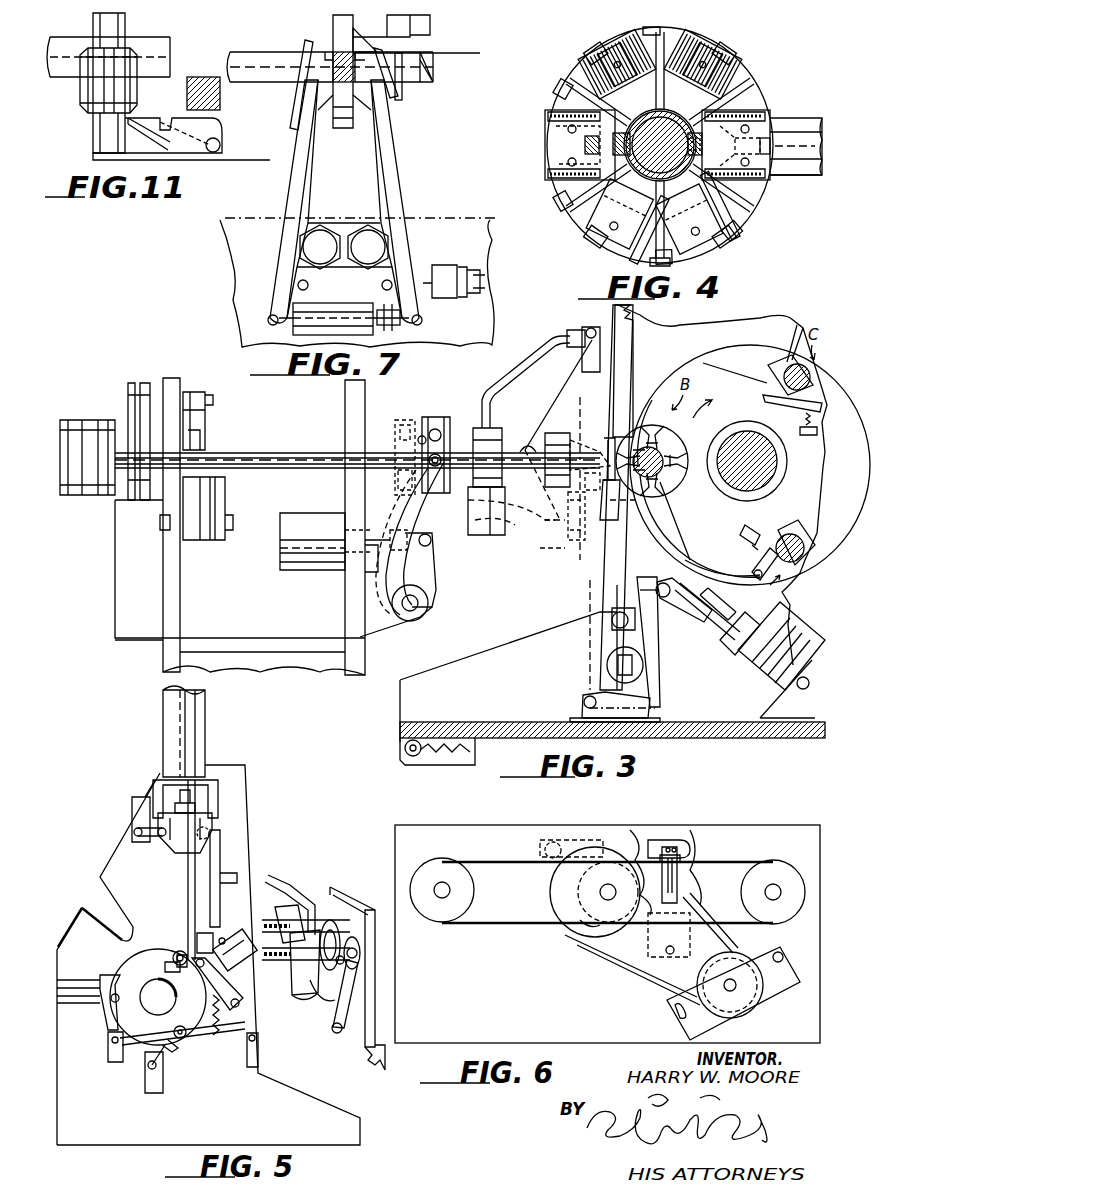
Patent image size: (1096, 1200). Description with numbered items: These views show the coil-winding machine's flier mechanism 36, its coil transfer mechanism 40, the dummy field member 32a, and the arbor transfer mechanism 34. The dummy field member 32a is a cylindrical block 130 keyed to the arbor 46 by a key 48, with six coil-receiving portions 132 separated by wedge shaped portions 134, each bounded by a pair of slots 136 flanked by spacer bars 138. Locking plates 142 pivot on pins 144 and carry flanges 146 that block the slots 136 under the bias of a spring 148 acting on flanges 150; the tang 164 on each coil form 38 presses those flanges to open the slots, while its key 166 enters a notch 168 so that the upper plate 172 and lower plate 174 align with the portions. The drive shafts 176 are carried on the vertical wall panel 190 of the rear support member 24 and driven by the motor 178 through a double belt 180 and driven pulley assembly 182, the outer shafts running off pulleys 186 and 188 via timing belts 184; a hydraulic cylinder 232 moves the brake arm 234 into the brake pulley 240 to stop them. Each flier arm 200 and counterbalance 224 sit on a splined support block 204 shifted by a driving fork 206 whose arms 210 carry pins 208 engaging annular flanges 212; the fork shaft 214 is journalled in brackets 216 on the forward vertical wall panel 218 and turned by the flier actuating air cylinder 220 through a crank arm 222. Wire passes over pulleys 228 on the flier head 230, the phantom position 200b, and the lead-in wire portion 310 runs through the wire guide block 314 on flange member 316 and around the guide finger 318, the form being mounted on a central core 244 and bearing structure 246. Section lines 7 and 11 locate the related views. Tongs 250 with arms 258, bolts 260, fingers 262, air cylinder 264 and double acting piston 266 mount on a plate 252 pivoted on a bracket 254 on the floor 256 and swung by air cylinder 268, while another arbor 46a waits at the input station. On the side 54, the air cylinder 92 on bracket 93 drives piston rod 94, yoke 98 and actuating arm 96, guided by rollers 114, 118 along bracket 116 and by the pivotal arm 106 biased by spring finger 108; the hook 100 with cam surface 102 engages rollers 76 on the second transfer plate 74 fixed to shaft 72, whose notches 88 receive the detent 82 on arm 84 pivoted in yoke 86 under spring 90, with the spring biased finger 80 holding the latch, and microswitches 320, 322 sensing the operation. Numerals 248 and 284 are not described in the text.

In FIG. 7, the section line 11— 11 is at (385, 15).
In FIG. 11, the wire portion 310 is at (150, 128).
In FIG. 11, the wire guide block 314 is at (218, 135).
In FIG. 7, the wire guide block 314 is at (405, 40).
In FIG. 11, the flange member 316 is at (205, 77).
In FIG. 7, the flange member 316 is at (432, 27).
In FIG. 3, the flange member 316 is at (638, 350).
In FIG. 7, the guide finger 318 is at (418, 66).
In FIG. 7, the central core 244 is at (340, 48).
In FIG. 7, the finger 262 is at (392, 92).
In FIG. 7, the tong 250 is at (393, 152).
In FIG. 3, the tong 250 is at (620, 565).
In FIG. 7, the arm 258 is at (318, 174).
In FIG. 7, the coil transfer mechanism 40 is at (254, 204).
In FIG. 3, the coil transfer mechanism 40 is at (576, 583).
In FIG. 7, the plate 252 is at (465, 224).
In FIG. 3, the plate 252 is at (655, 680).
In FIG. 7, the bolt 260 is at (362, 256).
In FIG. 7, the air cylinder 264 is at (345, 312).
In FIG. 3, the air cylinder 264 is at (662, 708).
In FIG. 7, the double acting piston 266 is at (390, 325).
In FIG. 4, the coil form 38 is at (797, 86).
In FIG. 4, the arbor 46 is at (646, 175).
In FIG. 4, the key 48 is at (654, 141).
In FIG. 4, the coil-receiving portion 132 is at (718, 246).
In FIG. 4, the wedge shaped portion 134 is at (565, 210).
In FIG. 4, the slot 136 is at (694, 256).
In FIG. 4, the dummy field member 32a is at (640, 25).
In FIG. 4, the block 130 is at (662, 25).
In FIG. 4, the pin 144 is at (610, 225).
In FIG. 4, the spacer bar 138 is at (722, 205).
In FIG. 4, the flange 146 is at (552, 118).
In FIG. 4, the locking plate 142 is at (552, 175).
In FIG. 4, the flange 150 is at (585, 147).
In FIG. 4, the spring 148 is at (710, 138).
In FIG. 4, the notch 168 is at (728, 252).
In FIG. 4, the key 166 is at (772, 146).
In FIG. 4, the upper plate 172 is at (804, 127).
In FIG. 4, the tang 164 is at (772, 177).
In FIG. 4, the lower plate 174 is at (814, 177).
In FIG. 3, the vertical wall panel 190 is at (175, 588).
In FIG. 6, the vertical wall panel 190 is at (507, 988).
In FIG. 3, the rear support member 24 is at (258, 635).
In FIG. 3, the pulley 186 is at (98, 424).
In FIG. 6, the pulley 186 is at (555, 890).
In FIG. 3, the drive shaft 176 is at (294, 452).
In FIG. 5, the drive shaft 176 is at (295, 962).
In FIG. 6, the drive shaft 176 is at (605, 892).
In FIG. 3, the driven pulley assembly 182 is at (120, 383).
In FIG. 3, the double belt 180 is at (133, 380).
In FIG. 6, the double belt 180 is at (655, 972).
In FIG. 3, the brake arm 234 is at (195, 392).
In FIG. 6, the brake arm 234 is at (658, 845).
In FIG. 3, the brake pulley 240 is at (195, 440).
In FIG. 3, the hydraulic cylinder 232 is at (212, 500).
In FIG. 3, the flier actuating air cylinder 220 is at (318, 522).
In FIG. 3, the forward vertical wall panel 218 is at (352, 598).
In FIG. 3, the bracket 216 is at (378, 622).
In FIG. 3, the driving fork 206 is at (393, 512).
In FIG. 3, the crank arm 222 is at (432, 545).
In FIG. 3, the shaft 214 is at (428, 605).
In FIG. 3, the pin 208 is at (395, 430).
In FIG. 3, the annular flange 212 is at (430, 420).
In FIG. 5, the annular flange 212 is at (342, 938).
In FIG. 3, the arm 210 is at (440, 513).
In FIG. 5, the arm 210 is at (347, 988).
In FIG. 3, the support block 204 is at (492, 428).
In FIG. 3, the counterbalance 224 is at (478, 543).
In FIG. 3, the bearing structure 246 is at (560, 438).
In FIG. 3, the wedge 248 is at (596, 471).
In FIG. 3, the phantom-line flier position 200b is at (540, 552).
In FIG. 3, the flier arm 200 is at (512, 370).
In FIG. 5, the flier arm 200 is at (288, 880).
In FIG. 3, the flier head 230 is at (568, 338).
In FIG. 3, the pulley 228 is at (588, 328).
In FIG. 3, the flier mechanism 36 is at (470, 396).
In FIG. 5, the flier mechanism 36 is at (307, 882).
In FIG. 3, the section line 7— 7 is at (575, 692).
In FIG. 3, the bracket 254 is at (565, 705).
In FIG. 3, the floor 256 is at (722, 736).
In FIG. 3, the piston rod 284 is at (732, 632).
In FIG. 3, the air cylinder 268 is at (805, 628).
In FIG. 3, the arbor 46a is at (790, 565).
In FIG. 5, the side 54 is at (116, 852).
In FIG. 5, the arbor transfer mechanism 34 is at (112, 832).
In FIG. 5, the air cylinder 92 is at (200, 715).
In FIG. 5, the bracket 93 is at (158, 780).
In FIG. 5, the piston rod 94 is at (178, 798).
In FIG. 5, the yoke 98 is at (180, 852).
In FIG. 5, the microswitch 320 is at (135, 812).
In FIG. 5, the guide roller 114 is at (207, 832).
In FIG. 5, the bracket 116 is at (212, 850).
In FIG. 5, the actuating arm 96 is at (190, 882).
In FIG. 5, the guide roller 118 is at (176, 933).
In FIG. 5, the hook 100 is at (207, 940).
In FIG. 5, the spring finger 108 is at (222, 965).
In FIG. 5, the pivotal arm 106 is at (222, 985).
In FIG. 5, the second transfer plate 74 is at (132, 966).
In FIG. 5, the shaft 72 is at (158, 997).
In FIG. 5, the cam surface 102 is at (168, 966).
In FIG. 5, the roller 76 is at (182, 1028).
In FIG. 5, the spring biased finger 80 is at (88, 985).
In FIG. 5, the spring 90 is at (213, 998).
In FIG. 5, the detent 82 is at (168, 1045).
In FIG. 5, the arm 84 is at (190, 1040).
In FIG. 5, the notch 88 is at (165, 1045).
In FIG. 5, the yoke 86 is at (252, 1052).
In FIG. 5, the microswitch 322 is at (148, 1080).
In FIG. 6, the pulley 188 is at (773, 914).
In FIG. 6, the timing belt 184 is at (730, 862).
In FIG. 6, the motor 178 is at (765, 1000).